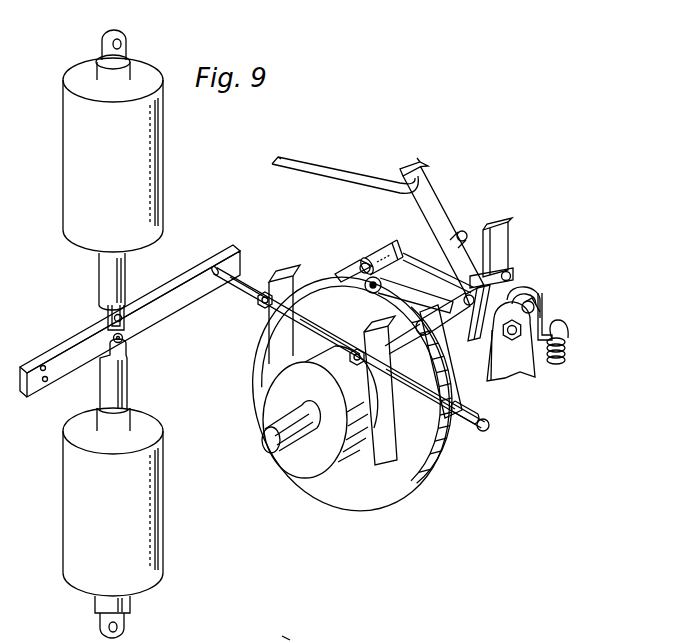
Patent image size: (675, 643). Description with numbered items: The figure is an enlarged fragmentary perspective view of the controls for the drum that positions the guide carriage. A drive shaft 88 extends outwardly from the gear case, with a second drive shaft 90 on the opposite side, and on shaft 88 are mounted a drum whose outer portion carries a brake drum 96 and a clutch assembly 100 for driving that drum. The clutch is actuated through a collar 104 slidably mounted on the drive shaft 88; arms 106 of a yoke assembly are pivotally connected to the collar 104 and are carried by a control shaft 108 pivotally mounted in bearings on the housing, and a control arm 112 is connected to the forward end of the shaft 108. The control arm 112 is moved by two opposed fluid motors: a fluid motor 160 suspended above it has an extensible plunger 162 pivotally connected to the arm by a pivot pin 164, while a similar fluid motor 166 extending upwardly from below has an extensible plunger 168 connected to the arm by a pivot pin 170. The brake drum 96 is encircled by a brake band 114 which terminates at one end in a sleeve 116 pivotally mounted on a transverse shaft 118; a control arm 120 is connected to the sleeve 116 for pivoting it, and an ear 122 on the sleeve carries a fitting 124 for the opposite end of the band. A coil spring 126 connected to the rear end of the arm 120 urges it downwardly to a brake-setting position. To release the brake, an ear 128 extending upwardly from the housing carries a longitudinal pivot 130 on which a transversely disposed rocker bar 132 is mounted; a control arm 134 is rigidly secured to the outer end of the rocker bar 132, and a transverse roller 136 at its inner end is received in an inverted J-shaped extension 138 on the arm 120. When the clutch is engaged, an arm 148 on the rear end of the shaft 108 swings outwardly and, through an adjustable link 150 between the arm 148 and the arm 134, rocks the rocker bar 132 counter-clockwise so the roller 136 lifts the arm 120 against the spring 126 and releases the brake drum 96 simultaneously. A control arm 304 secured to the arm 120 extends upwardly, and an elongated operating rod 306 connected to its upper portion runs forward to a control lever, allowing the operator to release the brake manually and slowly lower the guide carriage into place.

The drive shaft 88 is at (270, 447).
The drive shaft 90 is at (282, 638).
The brake drum 96 is at (326, 278).
The clutch assembly 100 is at (420, 487).
The collar 104 is at (303, 453).
The arms 106 is at (276, 338).
The control shaft 108 is at (488, 428).
The control arm 112 is at (183, 283).
The brake band 114 is at (344, 276).
The sleeve 116 is at (406, 254).
The transverse shaft 118 is at (466, 232).
The control arm 120 is at (478, 342).
The ear 122 is at (385, 248).
The fitting 124 is at (363, 261).
The coil spring 126 is at (571, 346).
The ear 128 is at (518, 373).
The pivot 130 is at (521, 327).
The rocker bar 132 is at (531, 300).
The control arm 134 is at (499, 252).
The roller 136 is at (542, 312).
The J-shaped extension 138 is at (524, 283).
The arm 148 is at (465, 398).
The adjustable link 150 is at (504, 272).
The fluid motor 160 is at (150, 191).
The plunger 162 is at (110, 278).
The pivot pin 164 is at (124, 320).
The fluid motor 166 is at (158, 568).
The plunger 168 is at (106, 377).
The pivot pin 170 is at (124, 342).
The control arm 304 is at (438, 188).
The operating rod 306 is at (312, 162).